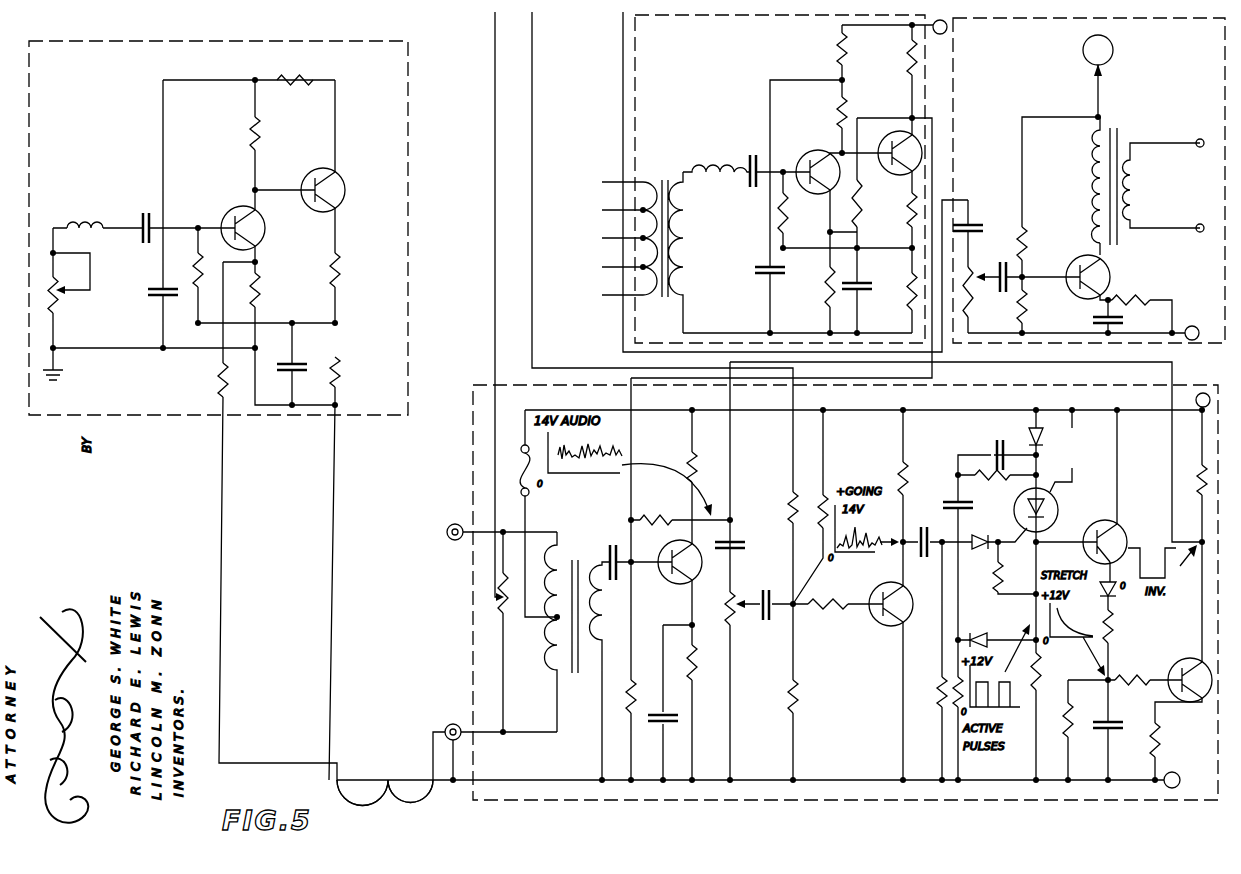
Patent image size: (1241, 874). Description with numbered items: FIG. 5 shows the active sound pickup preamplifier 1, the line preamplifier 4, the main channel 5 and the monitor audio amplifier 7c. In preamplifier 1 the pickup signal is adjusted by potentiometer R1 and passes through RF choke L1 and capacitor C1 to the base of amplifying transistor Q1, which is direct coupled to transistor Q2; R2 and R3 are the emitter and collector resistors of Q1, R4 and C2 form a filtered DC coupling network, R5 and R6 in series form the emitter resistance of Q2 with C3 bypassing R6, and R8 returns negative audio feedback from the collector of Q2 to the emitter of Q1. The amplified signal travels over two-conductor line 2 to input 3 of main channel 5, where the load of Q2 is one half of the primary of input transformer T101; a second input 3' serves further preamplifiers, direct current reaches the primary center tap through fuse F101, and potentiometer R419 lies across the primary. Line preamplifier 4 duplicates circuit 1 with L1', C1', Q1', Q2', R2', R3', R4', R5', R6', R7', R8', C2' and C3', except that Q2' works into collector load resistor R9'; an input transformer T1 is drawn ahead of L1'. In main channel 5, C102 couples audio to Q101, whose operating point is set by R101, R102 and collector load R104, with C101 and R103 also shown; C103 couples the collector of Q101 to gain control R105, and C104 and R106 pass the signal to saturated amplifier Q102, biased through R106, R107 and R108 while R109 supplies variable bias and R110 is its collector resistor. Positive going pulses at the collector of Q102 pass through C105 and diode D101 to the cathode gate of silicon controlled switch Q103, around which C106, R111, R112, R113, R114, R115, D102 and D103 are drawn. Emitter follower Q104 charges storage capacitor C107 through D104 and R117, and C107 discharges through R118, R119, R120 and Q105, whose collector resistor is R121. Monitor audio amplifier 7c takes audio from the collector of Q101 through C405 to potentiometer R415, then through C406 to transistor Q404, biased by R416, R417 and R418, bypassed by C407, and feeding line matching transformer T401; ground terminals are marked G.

The active sound pickup preamplifier 1 is at (408, 50).
The line 2 is at (390, 773).
The input connection 3 is at (445, 721).
The input connection 3' is at (440, 529).
The line preamplifier 4 is at (623, 74).
The main channel 5 is at (471, 427).
The monitor audio amplifier 7c is at (1215, 350).
The potentiometer R1 is at (58, 300).
The emitter resistor R2 is at (204, 380).
The collector resistor R3 is at (233, 134).
The resistor R4 is at (295, 68).
The emitter resistor R5 is at (348, 270).
The emitter resistor R6 is at (348, 372).
The feedback resistor R8 is at (267, 290).
The capacitor C1 is at (138, 213).
The capacitor C2 is at (145, 296).
The bypass capacitor C3 is at (280, 387).
The RF choke L1 is at (85, 212).
The amplifying transistor Q1 is at (250, 220).
The transistor Q2 is at (337, 190).
The transformer T1 is at (666, 174).
The RF choke L1' is at (716, 154).
The capacitor C1' is at (751, 155).
The capacitor C2' is at (752, 272).
The capacitor C3' is at (865, 299).
The transistor Q1' is at (818, 156).
The transistor Q2' is at (896, 167).
The resistor R2' is at (810, 287).
The resistor R3' is at (858, 111).
The resistor R4' is at (824, 49).
The resistor R5' is at (894, 233).
The resistor R6' is at (894, 305).
The resistor R7' is at (796, 213).
The resistor R8' is at (872, 207).
The collector load resistor R9' is at (894, 57).
The ground terminal G is at (1181, 557).
The line matching transformer T401 is at (1111, 139).
The transistor Q404 is at (1108, 269).
The potentiometer R415 is at (980, 288).
The emitter resistor R416 is at (1138, 298).
The base bias resistor R417 is at (1023, 311).
The base bias resistor R418 is at (1027, 237).
The coupling capacitor C405 is at (976, 229).
The coupling capacitor C406 is at (996, 266).
The bypass capacitor C407 is at (1128, 318).
The fuse F101 is at (515, 474).
The potentiometer R419 is at (512, 610).
The input transformer T101 is at (574, 560).
The capacitor C101 is at (648, 728).
The coupling capacitor C102 is at (618, 536).
The coupling capacitor C103 is at (747, 546).
The coupling capacitor C104 is at (772, 578).
The capacitor C105 is at (936, 517).
The capacitor C106 is at (994, 446).
The current storage capacitor C107 is at (1126, 728).
The transistor Q101 is at (672, 544).
The saturated amplifier transistor Q102 is at (888, 590).
The silicon controlled switch Q103 is at (1058, 502).
The emitter follower transistor Q104 is at (1118, 528).
The transistor Q105 is at (1184, 704).
The emitter resistor R101 is at (696, 678).
The base bias resistor R102 is at (637, 690).
The resistor R103 is at (661, 517).
The collector load resistor R104 is at (691, 456).
The potentiometer R105 is at (732, 625).
The resistor R106 is at (827, 612).
The resistor R107 is at (798, 694).
The resistor R108 is at (818, 492).
The resistor R109 is at (788, 500).
The collector resistor R110 is at (898, 466).
The resistor R111 is at (938, 674).
The resistor R112 is at (996, 594).
The resistor R113 is at (1042, 671).
The resistor R114 is at (938, 716).
The resistor R115 is at (975, 482).
The resistor R117 is at (1113, 626).
The resistor R118 is at (1064, 730).
The resistor R119 is at (1132, 676).
The resistor R120 is at (1160, 750).
The collector resistor R121 is at (1197, 485).
The silicon diode D101 is at (981, 536).
The diode D102 is at (990, 635).
The diode D103 is at (1028, 432).
The silicon diode D104 is at (1120, 599).